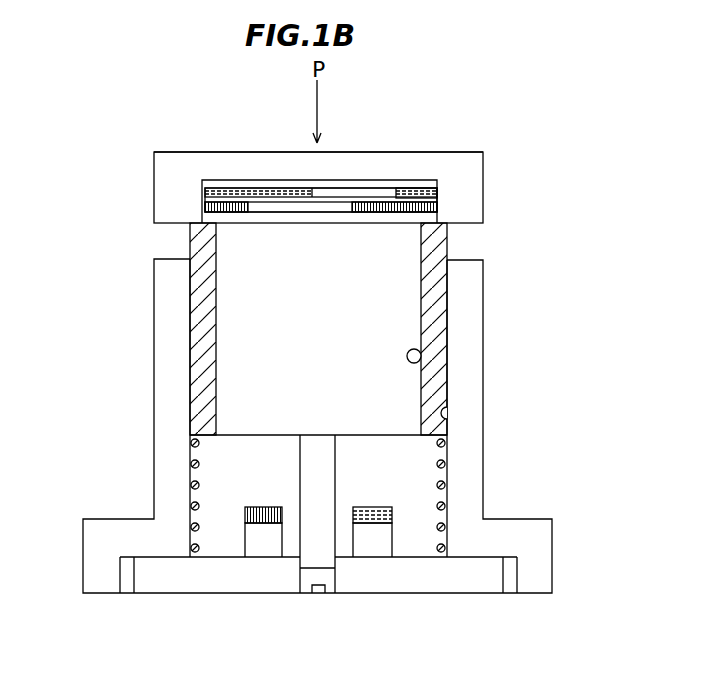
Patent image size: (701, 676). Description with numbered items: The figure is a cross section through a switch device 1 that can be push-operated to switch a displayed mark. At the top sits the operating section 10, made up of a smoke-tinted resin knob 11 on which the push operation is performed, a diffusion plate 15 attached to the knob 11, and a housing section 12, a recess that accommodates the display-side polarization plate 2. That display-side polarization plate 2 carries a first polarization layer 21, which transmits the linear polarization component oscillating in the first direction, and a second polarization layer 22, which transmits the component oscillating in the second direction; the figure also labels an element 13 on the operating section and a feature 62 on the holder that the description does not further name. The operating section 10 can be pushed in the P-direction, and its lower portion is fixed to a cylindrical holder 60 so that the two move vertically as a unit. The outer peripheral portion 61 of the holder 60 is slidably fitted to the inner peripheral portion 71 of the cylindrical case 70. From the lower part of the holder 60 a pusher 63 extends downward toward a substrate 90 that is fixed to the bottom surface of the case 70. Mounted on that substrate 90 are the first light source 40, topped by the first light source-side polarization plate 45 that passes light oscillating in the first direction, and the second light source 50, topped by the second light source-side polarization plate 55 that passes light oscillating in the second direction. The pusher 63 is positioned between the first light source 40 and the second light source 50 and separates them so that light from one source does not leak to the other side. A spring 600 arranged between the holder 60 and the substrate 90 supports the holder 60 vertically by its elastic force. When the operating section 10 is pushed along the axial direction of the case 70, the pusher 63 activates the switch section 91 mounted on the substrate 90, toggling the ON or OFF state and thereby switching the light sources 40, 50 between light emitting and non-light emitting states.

The switch device 1 is at (82, 103).
The display-side polarization plate 2 is at (236, 169).
The operating section 10 is at (337, 188).
The knob 11 is at (484, 158).
The housing section 12 is at (438, 197).
The pressure receiving surface 13 is at (333, 152).
The diffusion plate 15 is at (260, 182).
The first polarization layer 21 is at (203, 207).
The second polarization layer 22 is at (204, 185).
The first light source 40 is at (261, 557).
The first light source-side polarization plate 45 is at (244, 517).
The second light source 50 is at (382, 557).
The second light source-side polarization plate 55 is at (376, 523).
The holder 60 is at (360, 329).
The outer peripheral portion 61 is at (447, 377).
The through hole 62 is at (420, 348).
The pusher 63 is at (336, 480).
The case 70 is at (542, 520).
The inner peripheral portion 71 is at (447, 407).
The substrate 90 is at (482, 576).
The switch section 91 is at (316, 595).
The spring 600 is at (447, 503).